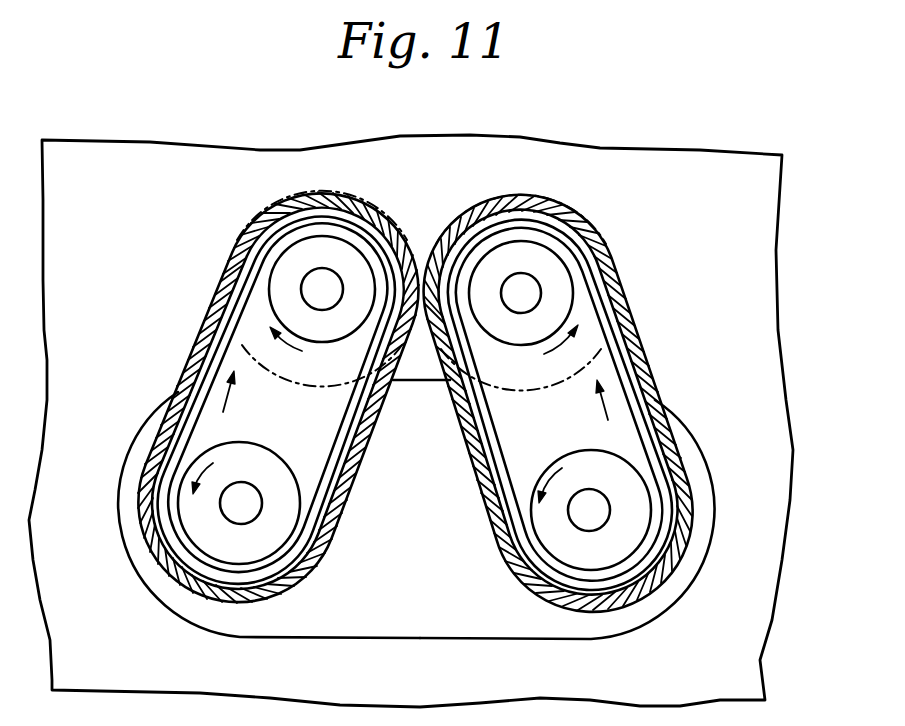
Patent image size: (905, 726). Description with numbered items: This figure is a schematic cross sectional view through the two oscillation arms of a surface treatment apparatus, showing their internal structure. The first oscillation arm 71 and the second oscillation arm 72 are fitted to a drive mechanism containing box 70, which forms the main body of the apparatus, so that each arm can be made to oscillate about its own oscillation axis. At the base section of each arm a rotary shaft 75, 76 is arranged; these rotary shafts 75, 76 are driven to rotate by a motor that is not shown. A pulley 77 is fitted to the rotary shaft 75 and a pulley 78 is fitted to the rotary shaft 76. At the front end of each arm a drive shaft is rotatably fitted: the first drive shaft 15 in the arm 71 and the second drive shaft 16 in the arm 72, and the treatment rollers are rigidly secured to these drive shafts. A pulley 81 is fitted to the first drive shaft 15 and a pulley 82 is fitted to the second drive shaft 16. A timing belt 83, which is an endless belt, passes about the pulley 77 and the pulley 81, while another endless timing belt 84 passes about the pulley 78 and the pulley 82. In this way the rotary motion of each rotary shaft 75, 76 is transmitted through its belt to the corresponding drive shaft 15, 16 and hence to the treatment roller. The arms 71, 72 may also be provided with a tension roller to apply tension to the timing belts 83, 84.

The drive mechanism containing box 70 is at (777, 503).
The first oscillation arm 71 is at (170, 412).
The second oscillation arm 72 is at (655, 400).
The first drive shaft 15 is at (331, 290).
The second drive shaft 16 is at (527, 292).
The rotary shaft 75 is at (248, 513).
The rotary shaft 76 is at (598, 517).
The pulley 77 is at (235, 552).
The pulley 78 is at (617, 550).
The pulley 81 is at (300, 258).
The pulley 82 is at (535, 255).
The timing belt 83 is at (225, 372).
The timing belt 84 is at (612, 375).